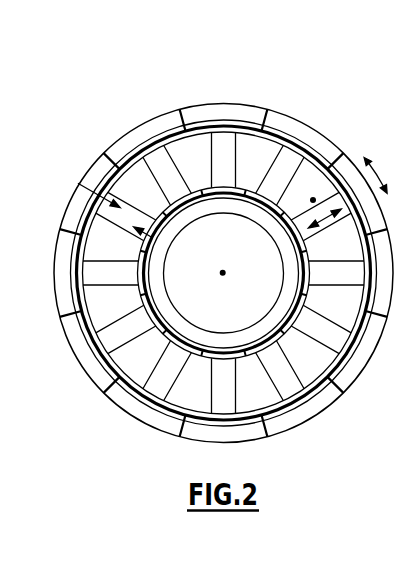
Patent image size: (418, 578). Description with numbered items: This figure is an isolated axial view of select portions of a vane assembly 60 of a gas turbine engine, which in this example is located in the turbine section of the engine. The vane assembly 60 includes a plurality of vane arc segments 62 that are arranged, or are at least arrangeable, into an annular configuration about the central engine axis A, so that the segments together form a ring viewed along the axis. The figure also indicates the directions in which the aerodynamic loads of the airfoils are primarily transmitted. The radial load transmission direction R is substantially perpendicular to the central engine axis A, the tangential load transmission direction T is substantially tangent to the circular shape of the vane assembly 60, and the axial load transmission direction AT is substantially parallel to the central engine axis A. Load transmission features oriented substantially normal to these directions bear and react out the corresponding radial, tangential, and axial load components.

The vane assembly 60 is at (112, 432).
The vane arc segments 62 is at (310, 125).
The central engine axis A is at (226, 273).
The axial load transmission direction AT is at (313, 200).
The tangential load transmission direction T is at (376, 174).
The radial load transmission direction R is at (326, 218).